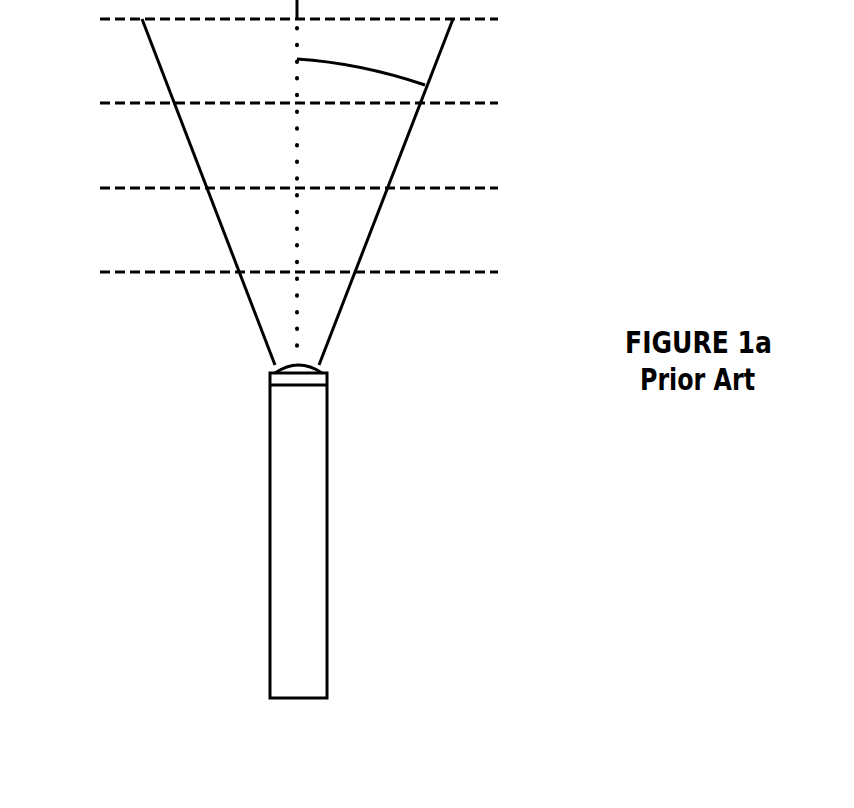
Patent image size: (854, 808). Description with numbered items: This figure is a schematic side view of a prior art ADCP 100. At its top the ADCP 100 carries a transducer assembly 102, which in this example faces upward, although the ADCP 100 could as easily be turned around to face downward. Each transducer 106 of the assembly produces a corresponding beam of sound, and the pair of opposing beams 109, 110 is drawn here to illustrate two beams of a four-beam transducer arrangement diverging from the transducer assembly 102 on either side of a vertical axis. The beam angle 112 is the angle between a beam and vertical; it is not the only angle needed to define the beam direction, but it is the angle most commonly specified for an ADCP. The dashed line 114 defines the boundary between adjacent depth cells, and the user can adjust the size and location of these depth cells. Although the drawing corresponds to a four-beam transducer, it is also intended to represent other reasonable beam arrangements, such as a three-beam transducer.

The ADCP 100 is at (268, 558).
The transducer assembly 102 is at (327, 378).
The transducer 106 is at (277, 367).
The beam 109 is at (190, 144).
The beam 110 is at (400, 157).
The beam angle 112 is at (368, 63).
The dashed line 114 is at (123, 272).